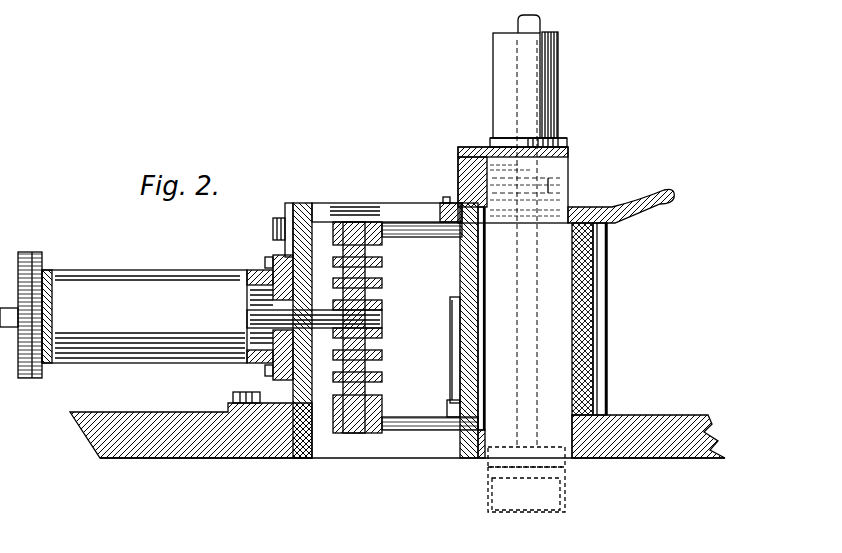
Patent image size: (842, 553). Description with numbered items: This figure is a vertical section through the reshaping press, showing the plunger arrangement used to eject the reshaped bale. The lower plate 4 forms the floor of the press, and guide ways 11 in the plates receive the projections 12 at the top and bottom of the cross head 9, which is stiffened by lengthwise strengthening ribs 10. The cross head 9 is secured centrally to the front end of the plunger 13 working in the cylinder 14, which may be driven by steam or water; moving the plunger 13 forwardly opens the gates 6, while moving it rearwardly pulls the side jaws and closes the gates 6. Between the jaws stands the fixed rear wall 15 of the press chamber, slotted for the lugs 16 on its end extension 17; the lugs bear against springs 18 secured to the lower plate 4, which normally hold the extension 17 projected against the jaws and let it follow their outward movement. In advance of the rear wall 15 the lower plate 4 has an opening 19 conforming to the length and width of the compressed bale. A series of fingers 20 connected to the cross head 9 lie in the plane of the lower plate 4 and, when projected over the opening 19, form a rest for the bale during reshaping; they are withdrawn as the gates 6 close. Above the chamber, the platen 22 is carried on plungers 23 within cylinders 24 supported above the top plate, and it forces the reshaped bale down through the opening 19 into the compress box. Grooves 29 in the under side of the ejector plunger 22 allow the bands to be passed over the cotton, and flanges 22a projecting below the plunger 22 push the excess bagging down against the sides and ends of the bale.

The lower plate 4 is at (183, 412).
The gates 6 is at (607, 320).
The cross head 9 is at (382, 370).
The strengthening ribs 10 is at (382, 286).
The guide ways 11 is at (410, 225).
The projections 12 is at (358, 235).
The plunger 13 is at (247, 319).
The cylinder 14 is at (123, 315).
The fixed rear wall 15 is at (485, 313).
The lugs 16 is at (450, 318).
The end extension 17 is at (485, 292).
The springs 18 is at (452, 370).
The opening 19 is at (557, 437).
The fingers 20 is at (410, 420).
The platen 22 is at (570, 202).
The flanges or fingers 22a is at (565, 508).
The plungers 23 is at (542, 22).
The cylinders 24 is at (568, 139).
The grooves 29 is at (550, 225).